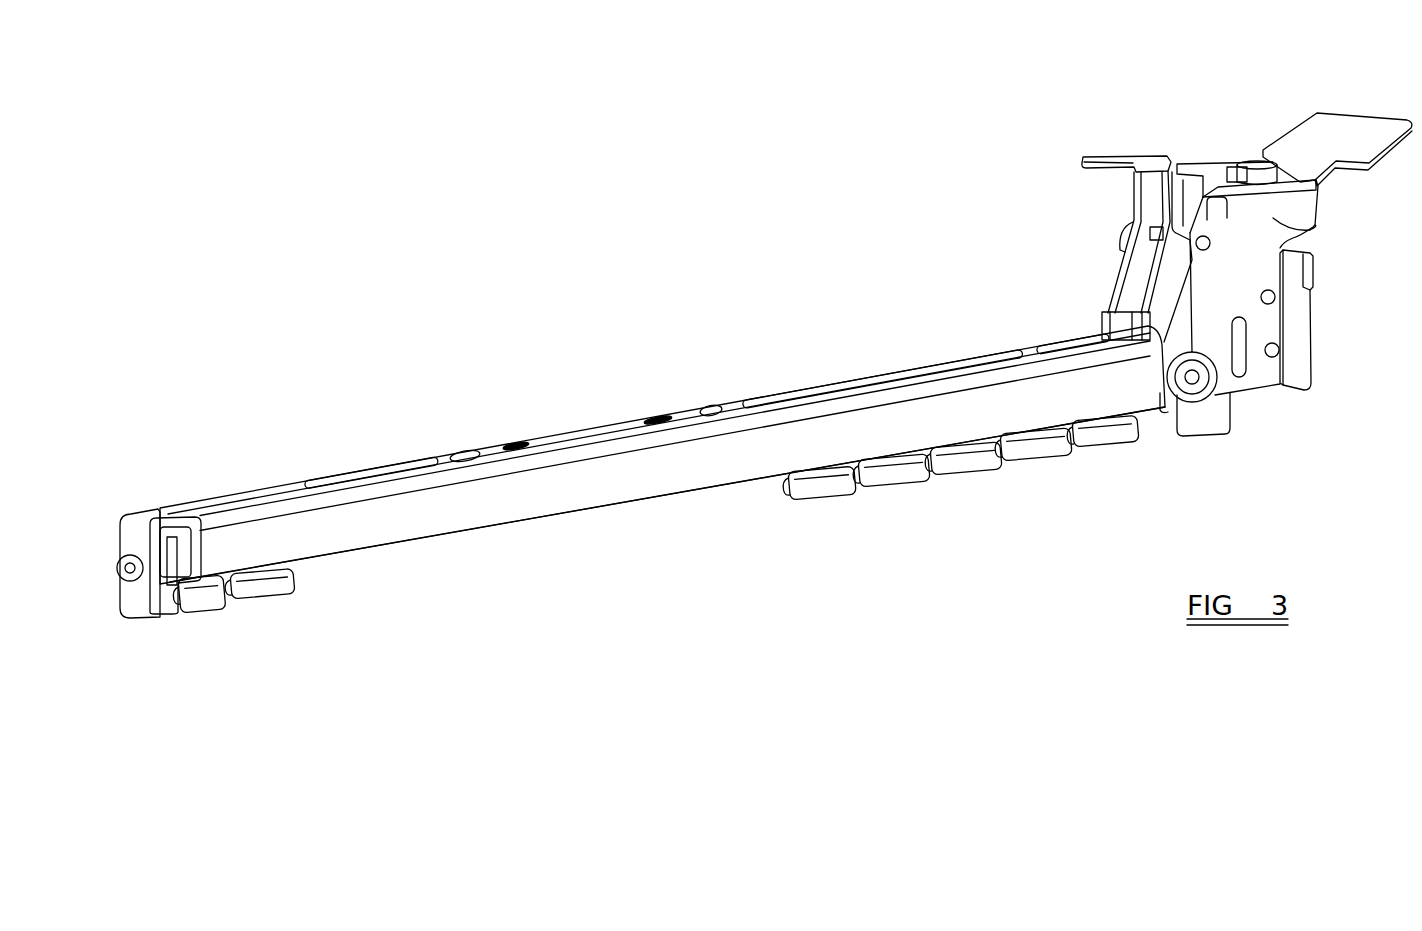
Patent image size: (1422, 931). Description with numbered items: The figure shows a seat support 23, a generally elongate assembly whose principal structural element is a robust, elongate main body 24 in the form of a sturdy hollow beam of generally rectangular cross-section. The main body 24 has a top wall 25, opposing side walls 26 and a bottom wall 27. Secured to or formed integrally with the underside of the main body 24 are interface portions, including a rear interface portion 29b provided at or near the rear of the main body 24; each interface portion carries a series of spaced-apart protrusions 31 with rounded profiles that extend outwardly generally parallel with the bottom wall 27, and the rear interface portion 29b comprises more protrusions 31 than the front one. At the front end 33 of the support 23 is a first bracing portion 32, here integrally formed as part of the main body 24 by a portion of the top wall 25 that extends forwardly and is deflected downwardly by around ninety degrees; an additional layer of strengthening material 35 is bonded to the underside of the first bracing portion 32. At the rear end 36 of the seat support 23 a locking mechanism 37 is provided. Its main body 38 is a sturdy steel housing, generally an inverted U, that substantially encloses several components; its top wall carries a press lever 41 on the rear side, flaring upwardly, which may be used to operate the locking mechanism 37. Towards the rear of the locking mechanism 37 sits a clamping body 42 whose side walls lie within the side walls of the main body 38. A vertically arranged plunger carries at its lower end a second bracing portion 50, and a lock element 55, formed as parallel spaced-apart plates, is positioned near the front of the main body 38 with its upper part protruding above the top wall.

The seat support 23 is at (613, 217).
The main body 24 is at (610, 482).
The top wall 25 is at (592, 428).
The side walls 26 is at (530, 510).
The bottom wall 27 is at (447, 548).
The rear interface portion 29b is at (664, 590).
The protrusions 31 is at (292, 598).
The first bracing portion 32 is at (136, 604).
The front end 33 is at (139, 538).
The strengthening material 35 is at (168, 550).
The rear end 36 is at (1194, 246).
The locking mechanism 37 is at (1205, 128).
The main body 38 is at (1292, 238).
The press lever 41 is at (1341, 112).
The clamping body 42 is at (1298, 329).
The second bracing portion 50 is at (1222, 405).
The lock element 55 is at (1147, 198).